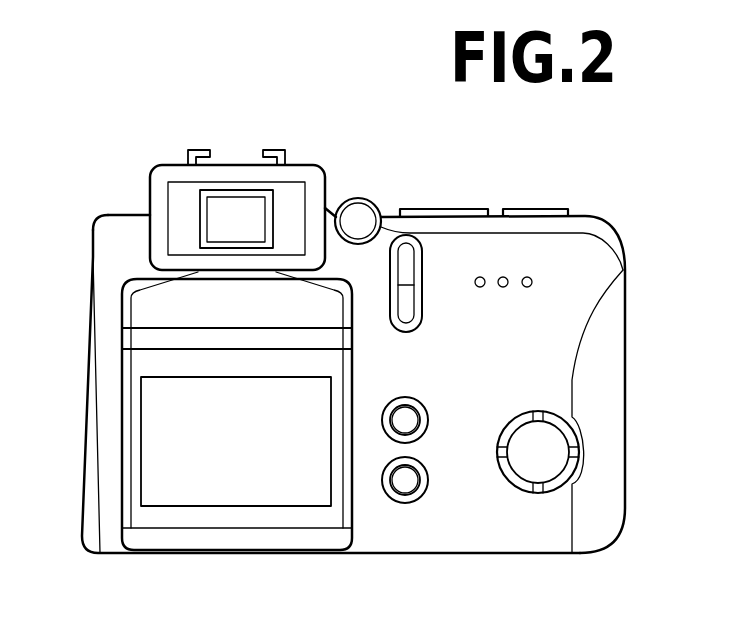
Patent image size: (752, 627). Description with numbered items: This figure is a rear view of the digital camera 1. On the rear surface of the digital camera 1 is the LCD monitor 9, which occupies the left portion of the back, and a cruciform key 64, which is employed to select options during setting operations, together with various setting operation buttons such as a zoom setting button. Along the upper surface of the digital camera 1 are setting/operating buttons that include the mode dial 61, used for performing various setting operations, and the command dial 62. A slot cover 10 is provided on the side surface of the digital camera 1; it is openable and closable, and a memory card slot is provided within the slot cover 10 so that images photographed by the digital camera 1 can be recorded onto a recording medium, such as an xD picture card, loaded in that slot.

The digital camera 1 is at (180, 91).
The LCD monitor 9 is at (157, 416).
The slot cover 10 is at (610, 415).
The mode dial 61 is at (443, 209).
The command dial 62 is at (537, 209).
The cruciform key 64 is at (538, 468).